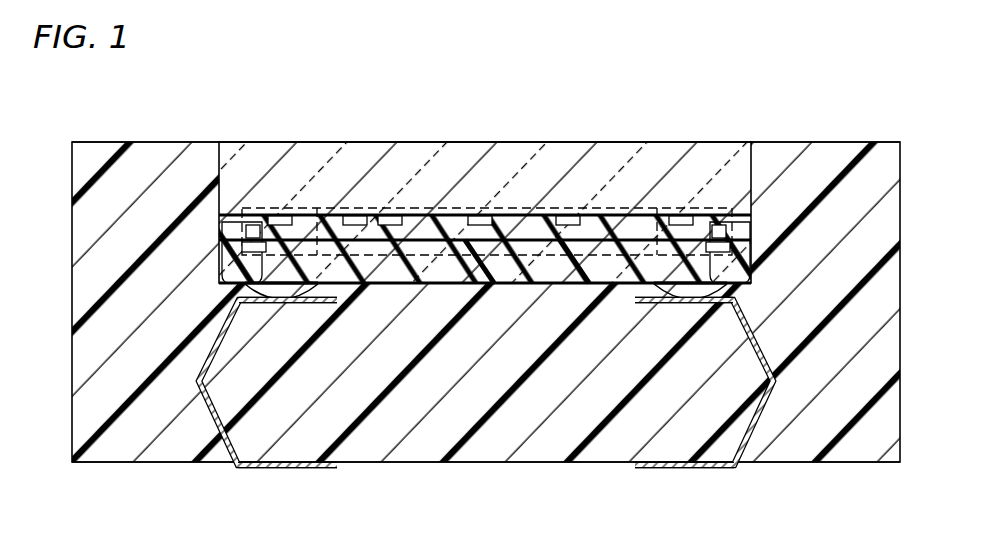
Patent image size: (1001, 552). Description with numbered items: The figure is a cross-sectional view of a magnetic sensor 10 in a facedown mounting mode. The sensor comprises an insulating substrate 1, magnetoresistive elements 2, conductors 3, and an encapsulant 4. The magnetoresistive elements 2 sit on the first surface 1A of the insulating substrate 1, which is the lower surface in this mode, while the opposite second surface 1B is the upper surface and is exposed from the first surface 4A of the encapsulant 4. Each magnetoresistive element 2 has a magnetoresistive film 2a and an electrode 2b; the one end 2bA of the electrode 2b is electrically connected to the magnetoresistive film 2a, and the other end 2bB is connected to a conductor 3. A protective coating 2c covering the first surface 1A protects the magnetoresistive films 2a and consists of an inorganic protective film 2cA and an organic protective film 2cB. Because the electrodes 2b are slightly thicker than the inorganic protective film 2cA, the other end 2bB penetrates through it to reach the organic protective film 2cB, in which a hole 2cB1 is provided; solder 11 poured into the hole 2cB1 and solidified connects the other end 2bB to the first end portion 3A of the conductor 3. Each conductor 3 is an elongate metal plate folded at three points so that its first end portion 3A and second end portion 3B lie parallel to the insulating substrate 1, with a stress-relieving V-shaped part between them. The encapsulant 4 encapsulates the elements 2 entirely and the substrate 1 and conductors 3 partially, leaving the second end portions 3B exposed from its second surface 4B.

The magnetic sensor 10 is at (838, 113).
The insulating substrate 1 is at (671, 153).
The first surface 1A is at (433, 270).
The second surface 1B is at (621, 140).
The magnetoresistive element 2 is at (358, 207).
The magnetoresistive film 2a is at (280, 226).
The electrode 2b is at (272, 236).
The one end of electrode 2bA is at (250, 229).
The other end of electrode 2bB is at (257, 245).
The protective coating 2c is at (597, 322).
The inorganic protective film 2cA is at (480, 268).
The organic protective film 2cB is at (582, 271).
The hole 2cB1 is at (273, 292).
The solder 11 is at (268, 262).
The conductor 3 is at (198, 391).
The first end portion 3A is at (310, 305).
The second end portion 3B is at (287, 468).
The encapsulant 4 is at (118, 448).
The first surface of encapsulant 4A is at (167, 140).
The second surface of encapsulant 4B is at (179, 463).